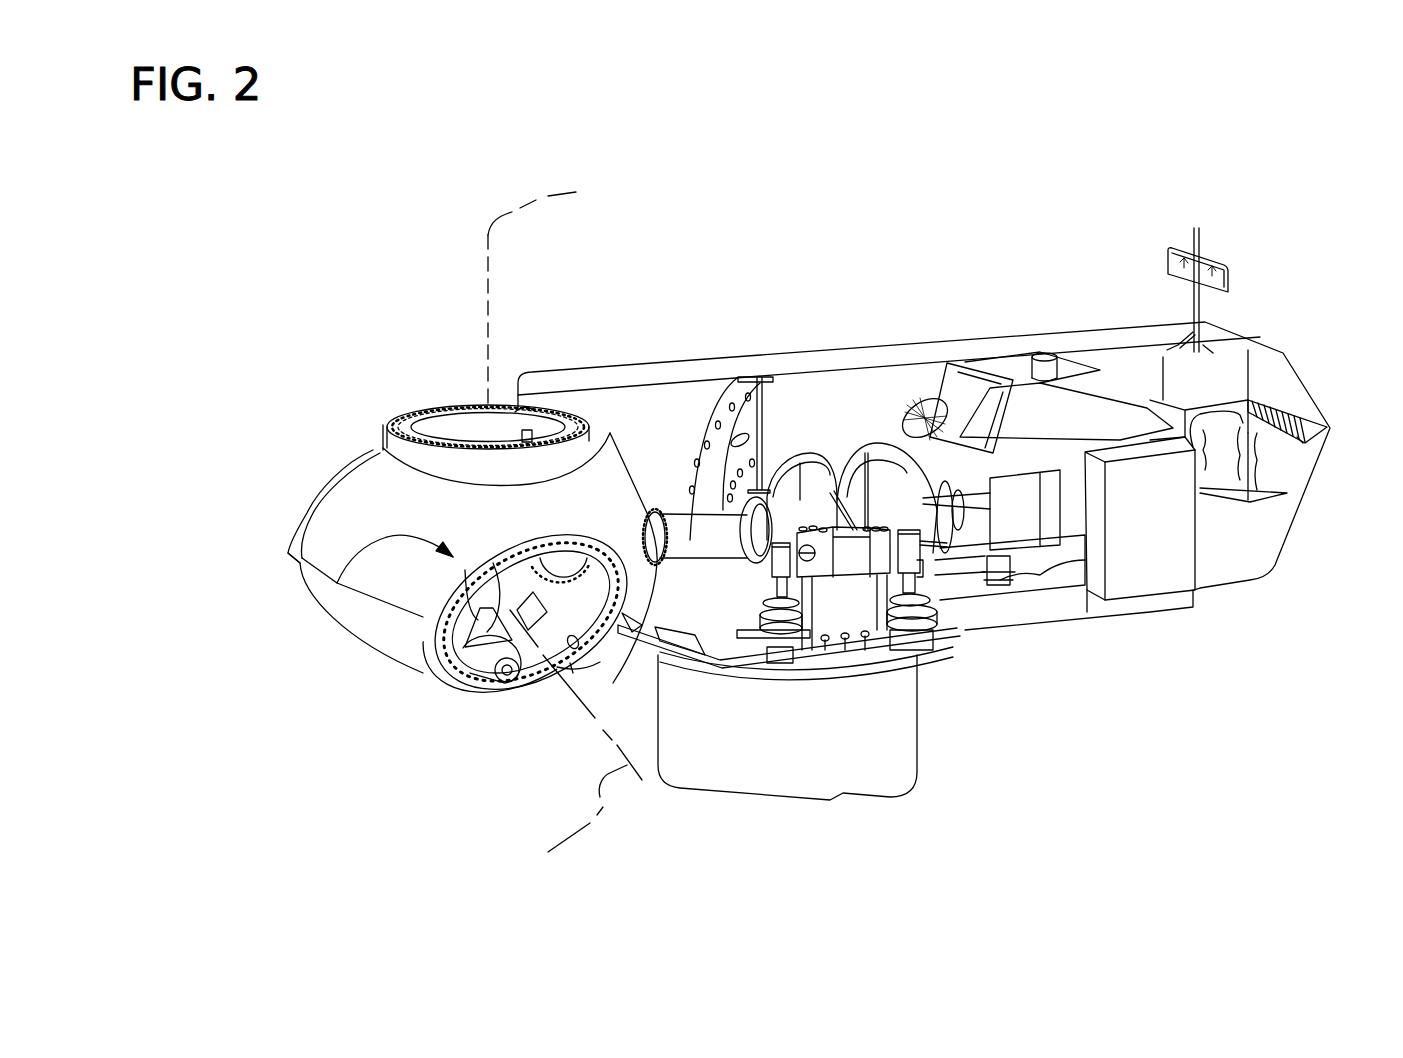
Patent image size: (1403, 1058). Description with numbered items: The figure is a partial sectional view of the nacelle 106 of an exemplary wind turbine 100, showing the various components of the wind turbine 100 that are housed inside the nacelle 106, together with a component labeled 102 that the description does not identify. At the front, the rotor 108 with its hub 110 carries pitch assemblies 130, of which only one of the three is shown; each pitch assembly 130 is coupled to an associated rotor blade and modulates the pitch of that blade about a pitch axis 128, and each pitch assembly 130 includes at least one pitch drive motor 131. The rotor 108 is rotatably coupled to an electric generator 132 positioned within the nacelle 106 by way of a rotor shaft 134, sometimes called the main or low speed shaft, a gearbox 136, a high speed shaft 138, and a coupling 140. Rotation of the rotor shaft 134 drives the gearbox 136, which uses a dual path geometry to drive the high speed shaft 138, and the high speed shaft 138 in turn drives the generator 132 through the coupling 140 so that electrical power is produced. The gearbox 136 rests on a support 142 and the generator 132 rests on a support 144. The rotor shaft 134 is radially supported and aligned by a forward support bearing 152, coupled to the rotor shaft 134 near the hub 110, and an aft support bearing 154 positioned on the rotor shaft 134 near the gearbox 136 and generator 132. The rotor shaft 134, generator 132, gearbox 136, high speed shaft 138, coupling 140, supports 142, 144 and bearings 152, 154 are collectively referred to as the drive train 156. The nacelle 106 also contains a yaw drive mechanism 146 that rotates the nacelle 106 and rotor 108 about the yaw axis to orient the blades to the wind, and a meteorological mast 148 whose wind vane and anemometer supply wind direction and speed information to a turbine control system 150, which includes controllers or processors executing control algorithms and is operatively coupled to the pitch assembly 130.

The wind turbine 100 is at (316, 281).
The tower 102 is at (843, 793).
The nacelle 106 is at (680, 290).
The rotor 108 is at (277, 547).
The hub 110 is at (387, 447).
The pitch axis 128 is at (565, 524).
The pitch assembly 130 is at (300, 563).
The pitch drive motor 131 is at (457, 610).
The electric generator 132 is at (1017, 530).
The rotor shaft 134 is at (675, 517).
The gearbox 136 is at (865, 453).
The high speed shaft 138 is at (932, 565).
The coupling 140 is at (960, 475).
The support 142 is at (890, 648).
The support 144 is at (985, 600).
The yaw drive mechanism 146 is at (780, 647).
The meteorological mast 148 is at (1227, 263).
The turbine control system 150 is at (1177, 550).
The forward support bearing 152 is at (660, 622).
The aft support bearing 154 is at (800, 470).
The drive train 156 is at (885, 387).